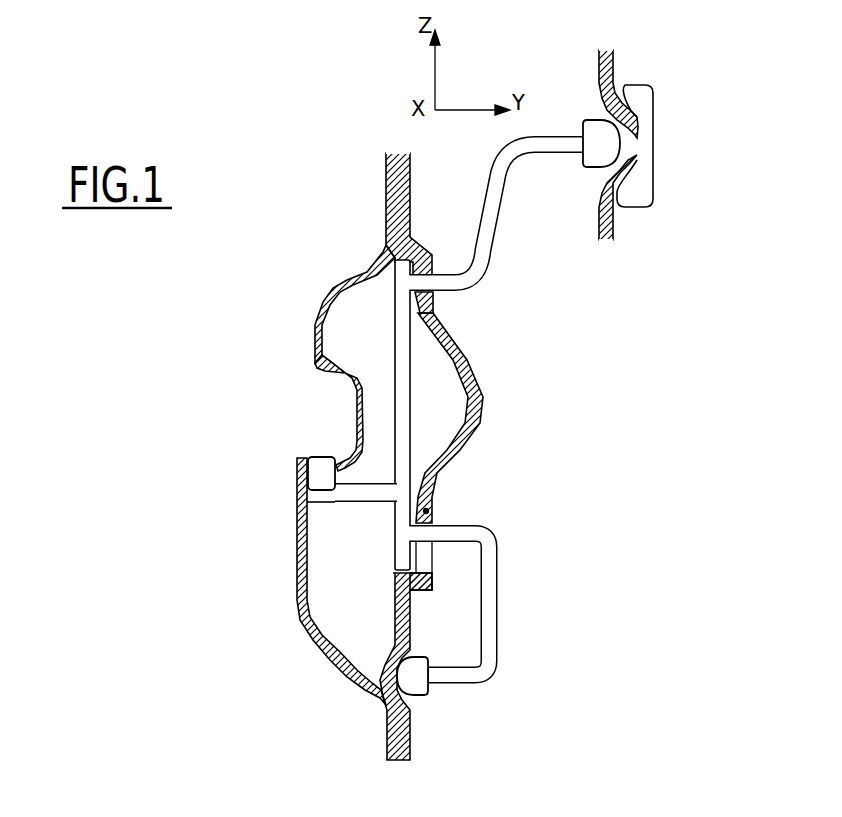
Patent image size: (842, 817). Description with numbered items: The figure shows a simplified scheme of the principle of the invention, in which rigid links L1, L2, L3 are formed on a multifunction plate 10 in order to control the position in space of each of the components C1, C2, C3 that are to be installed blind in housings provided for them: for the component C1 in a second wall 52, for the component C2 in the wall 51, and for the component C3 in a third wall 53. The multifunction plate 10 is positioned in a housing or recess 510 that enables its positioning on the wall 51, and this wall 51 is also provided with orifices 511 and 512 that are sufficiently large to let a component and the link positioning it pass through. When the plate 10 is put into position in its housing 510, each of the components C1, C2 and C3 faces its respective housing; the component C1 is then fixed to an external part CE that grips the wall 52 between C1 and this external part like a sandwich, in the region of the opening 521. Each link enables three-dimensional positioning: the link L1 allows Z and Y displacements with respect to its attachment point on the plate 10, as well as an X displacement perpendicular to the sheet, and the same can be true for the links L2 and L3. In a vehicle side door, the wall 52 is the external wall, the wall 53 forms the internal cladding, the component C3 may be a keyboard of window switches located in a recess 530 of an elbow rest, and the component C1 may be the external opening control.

The multifunction plate 10 is at (402, 338).
The wall 51 is at (412, 188).
The second wall 52 is at (607, 58).
The third wall 53 is at (337, 283).
The housing or recess 510 is at (393, 573).
The orifice 511 is at (440, 302).
The orifice 512 is at (430, 510).
The opening in second wall 521 is at (640, 182).
The recess 530 is at (356, 398).
The component C1 is at (593, 143).
The component C2 is at (418, 692).
The component C3 is at (316, 470).
The cover CE is at (645, 119).
The rigid link L1 is at (484, 258).
The rigid link L2 is at (488, 610).
The rigid link L3 is at (352, 493).